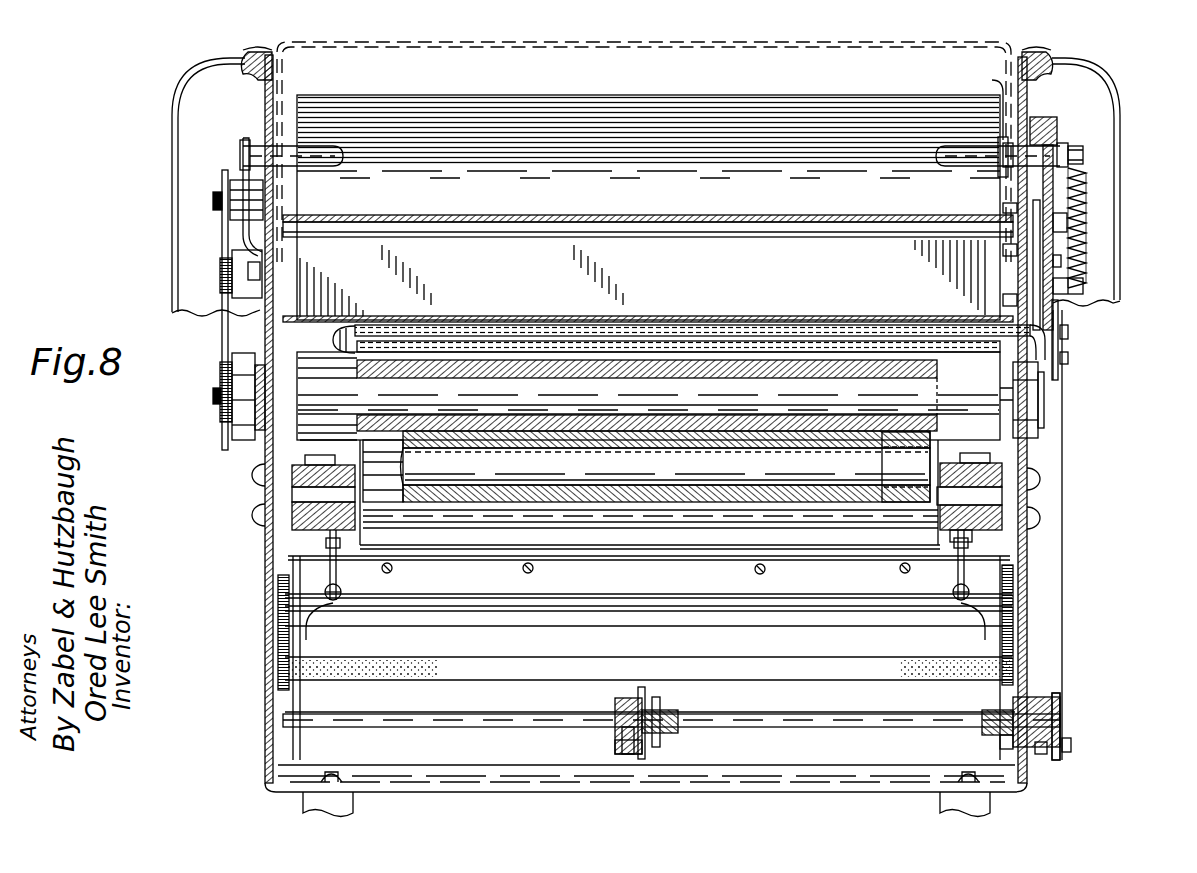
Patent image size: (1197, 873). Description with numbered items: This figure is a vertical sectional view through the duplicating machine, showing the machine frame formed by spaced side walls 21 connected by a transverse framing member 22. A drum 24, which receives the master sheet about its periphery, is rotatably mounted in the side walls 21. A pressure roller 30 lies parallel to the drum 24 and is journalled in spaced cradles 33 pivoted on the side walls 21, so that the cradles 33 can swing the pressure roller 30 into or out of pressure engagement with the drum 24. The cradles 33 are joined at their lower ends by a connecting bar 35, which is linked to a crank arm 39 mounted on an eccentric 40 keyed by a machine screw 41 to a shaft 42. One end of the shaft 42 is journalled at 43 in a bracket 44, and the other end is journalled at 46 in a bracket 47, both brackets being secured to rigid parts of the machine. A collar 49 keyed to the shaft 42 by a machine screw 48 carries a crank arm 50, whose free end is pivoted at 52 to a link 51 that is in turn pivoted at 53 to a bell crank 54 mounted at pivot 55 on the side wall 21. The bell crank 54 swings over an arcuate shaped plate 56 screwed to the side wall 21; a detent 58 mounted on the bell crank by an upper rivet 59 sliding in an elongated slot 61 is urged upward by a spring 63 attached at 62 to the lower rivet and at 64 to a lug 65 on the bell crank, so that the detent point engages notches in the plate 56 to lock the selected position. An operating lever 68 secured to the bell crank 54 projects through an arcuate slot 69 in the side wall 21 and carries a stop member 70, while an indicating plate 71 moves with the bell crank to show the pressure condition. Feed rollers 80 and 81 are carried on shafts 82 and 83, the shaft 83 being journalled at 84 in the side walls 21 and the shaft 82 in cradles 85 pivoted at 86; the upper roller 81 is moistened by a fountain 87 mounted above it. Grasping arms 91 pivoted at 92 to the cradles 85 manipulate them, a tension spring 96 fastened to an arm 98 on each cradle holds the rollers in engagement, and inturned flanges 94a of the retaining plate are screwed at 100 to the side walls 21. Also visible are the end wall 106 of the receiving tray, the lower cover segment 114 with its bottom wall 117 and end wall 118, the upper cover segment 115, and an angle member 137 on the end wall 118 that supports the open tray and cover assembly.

The side walls 21 is at (270, 612).
The transverse framing member 22 is at (520, 757).
The drum 24 is at (798, 94).
The pressure roller 30 is at (578, 510).
The cradles 33 is at (300, 696).
The connecting bar 35 is at (436, 714).
The crank arm 39 is at (642, 752).
The eccentric 40 is at (615, 700).
The machine screw 41 is at (622, 754).
The shaft 42 is at (832, 714).
The journal 43 is at (660, 702).
The bracket 44 is at (660, 734).
The journal 46 is at (985, 728).
The bracket 47 is at (1006, 749).
The machine screw 48 is at (1044, 754).
The collar 49 is at (1037, 698).
The crank arm 50 is at (1056, 698).
The link 51 is at (1064, 485).
The pivot 52 is at (1072, 745).
The pivot 53 is at (1068, 358).
The bell crank 54 is at (1055, 305).
The pivot 55 is at (1068, 334).
The arcuate shaped plate 56 is at (1040, 200).
The detent 58 is at (1045, 250).
The upper rivet 59 is at (1067, 222).
The elongated slot 61 is at (1055, 262).
The spring attachment 62 is at (1080, 287).
The spring 63 is at (1086, 205).
The spring attachment 64 is at (1083, 155).
The lug 65 is at (1068, 148).
The operating lever 68 is at (955, 150).
The arcuate slot 69 is at (1003, 178).
The stop member 70 is at (992, 80).
The indicating plate 71 is at (1052, 120).
The feed roller 80 is at (666, 490).
The feed roller 81 is at (936, 370).
The shaft 82 is at (547, 462).
The shaft 83 is at (335, 374).
The journal 84 is at (1020, 404).
The cradles 85 is at (290, 436).
The pivot 86 is at (292, 495).
The fountain 87 is at (817, 322).
The grasping arms 91 is at (355, 545).
The pivot 92 is at (948, 537).
The inturned flanges 94a is at (265, 536).
The tension spring 96 is at (342, 590).
The arm 98 is at (340, 604).
The screws 100 is at (256, 512).
The end wall 106 is at (792, 548).
The lower cover segment 114 is at (768, 612).
The upper cover segment 115 is at (611, 58).
The bottom wall 117 is at (570, 624).
The end wall 118 is at (662, 606).
The angle member 137 is at (310, 625).